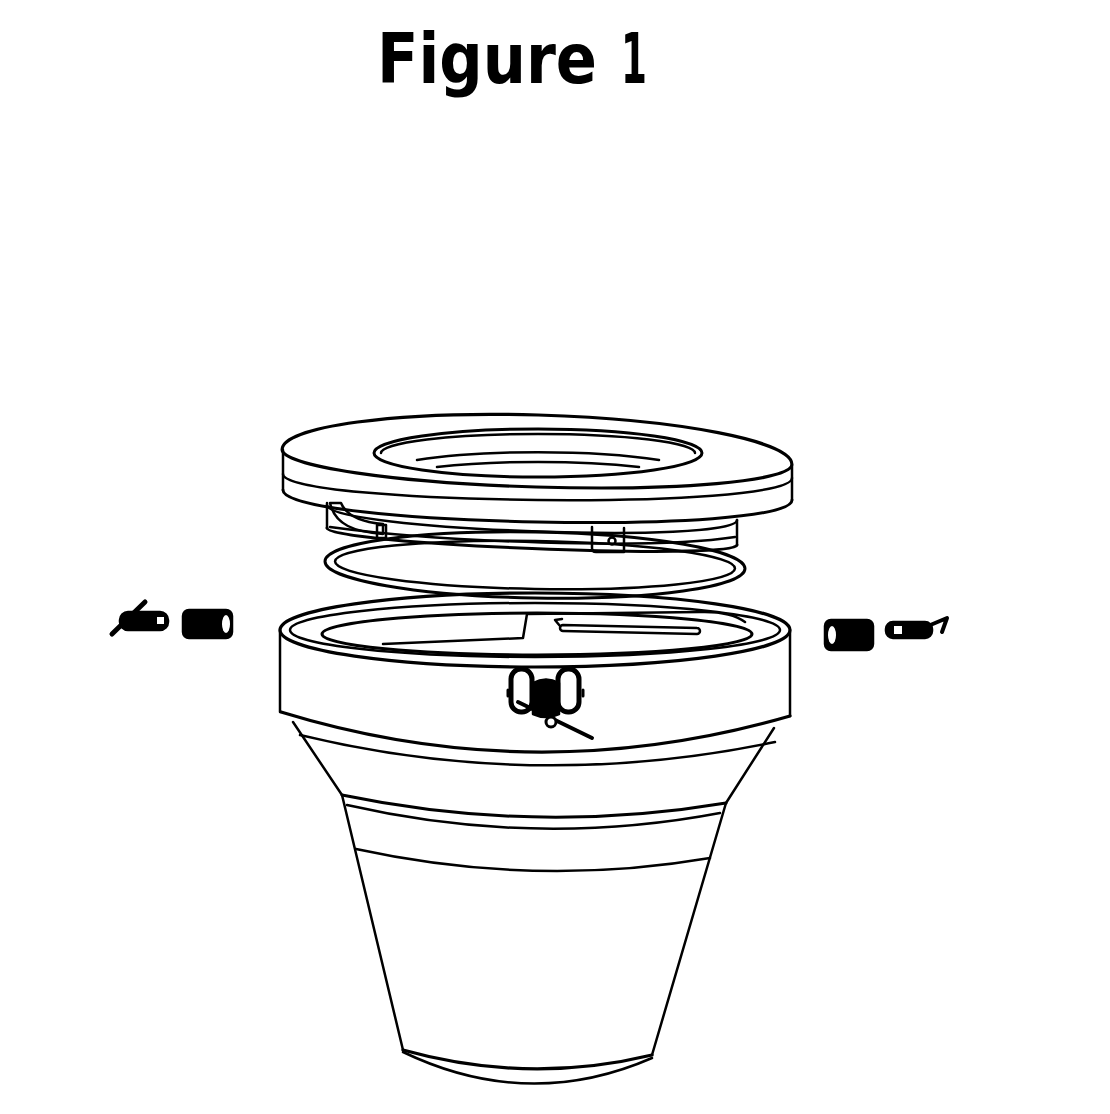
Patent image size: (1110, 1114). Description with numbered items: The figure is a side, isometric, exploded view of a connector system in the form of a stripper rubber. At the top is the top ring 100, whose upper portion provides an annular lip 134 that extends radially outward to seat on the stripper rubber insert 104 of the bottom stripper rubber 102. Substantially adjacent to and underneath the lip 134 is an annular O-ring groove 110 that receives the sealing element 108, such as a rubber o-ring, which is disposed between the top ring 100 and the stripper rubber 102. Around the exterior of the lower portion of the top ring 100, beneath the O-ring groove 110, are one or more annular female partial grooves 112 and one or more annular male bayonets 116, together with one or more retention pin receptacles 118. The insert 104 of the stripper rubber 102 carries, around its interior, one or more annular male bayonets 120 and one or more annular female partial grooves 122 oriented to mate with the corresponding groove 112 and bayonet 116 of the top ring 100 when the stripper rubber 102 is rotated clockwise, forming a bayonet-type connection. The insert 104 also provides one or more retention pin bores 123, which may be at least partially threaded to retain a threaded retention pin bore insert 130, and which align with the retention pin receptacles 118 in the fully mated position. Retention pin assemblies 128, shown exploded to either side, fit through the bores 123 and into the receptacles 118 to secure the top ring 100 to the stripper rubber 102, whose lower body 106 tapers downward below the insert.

The top ring 100 is at (588, 421).
The bottom stripper rubber 102 is at (526, 834).
The insert 104 is at (526, 727).
The lower tapered portion 106 is at (533, 954).
The sealing element 108 is at (335, 572).
The annular O-ring groove 110 is at (378, 533).
The annular female partial groove 112 is at (495, 506).
The annular male bayonet 116 is at (333, 518).
The retention pin receptacle 118 is at (622, 544).
The annular male bayonet 120 is at (281, 683).
The annular female partial groove 122 is at (669, 635).
The retention pin bore 123 is at (587, 701).
The retention pin assembly 128 is at (156, 625).
The threaded retention pin bore insert 130 is at (204, 645).
The annular lip 134 is at (787, 485).